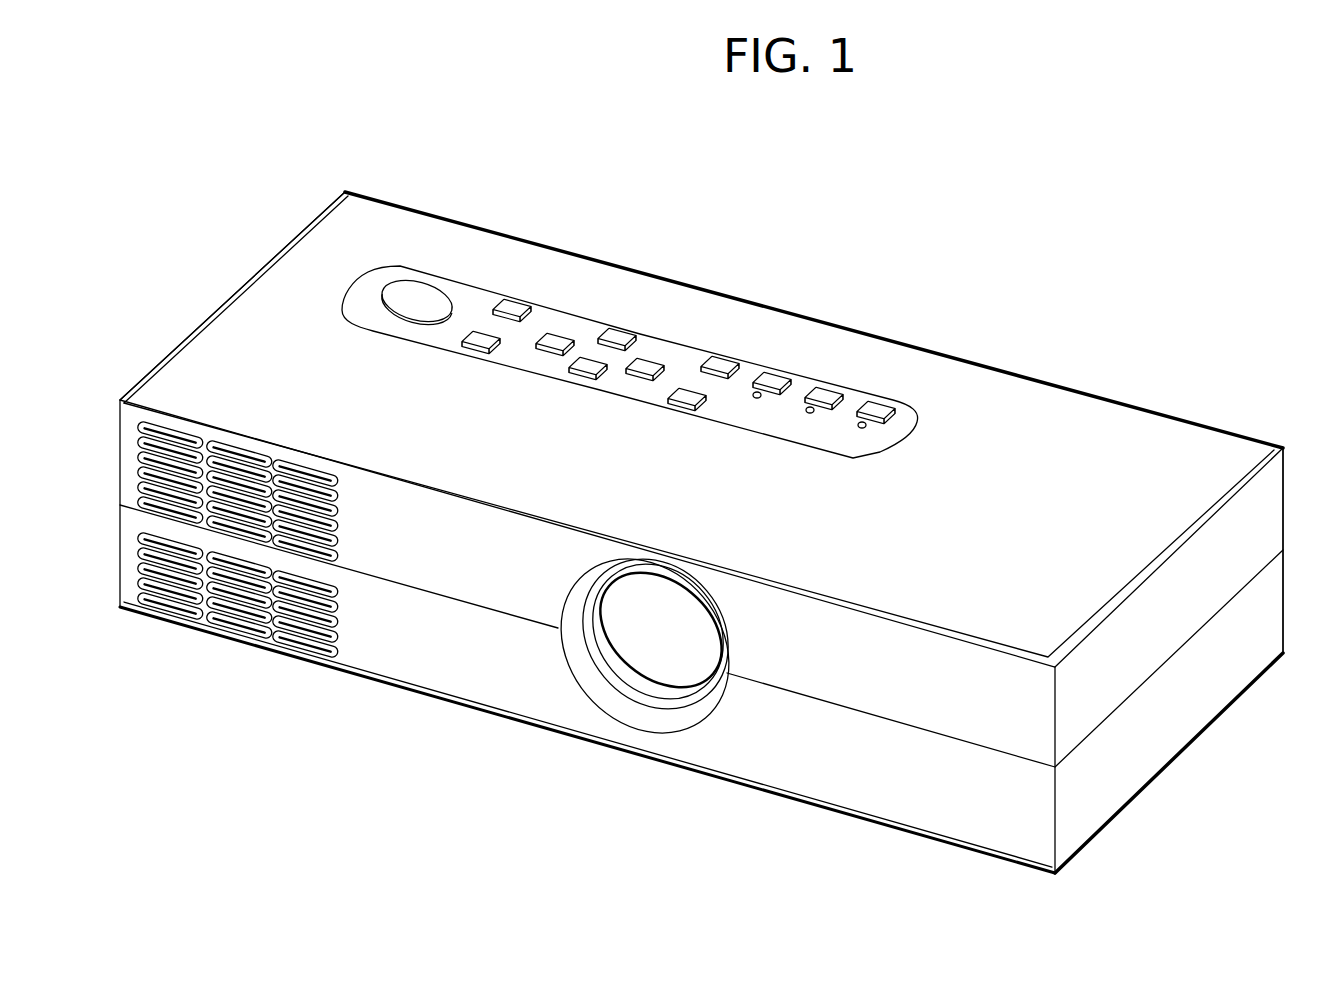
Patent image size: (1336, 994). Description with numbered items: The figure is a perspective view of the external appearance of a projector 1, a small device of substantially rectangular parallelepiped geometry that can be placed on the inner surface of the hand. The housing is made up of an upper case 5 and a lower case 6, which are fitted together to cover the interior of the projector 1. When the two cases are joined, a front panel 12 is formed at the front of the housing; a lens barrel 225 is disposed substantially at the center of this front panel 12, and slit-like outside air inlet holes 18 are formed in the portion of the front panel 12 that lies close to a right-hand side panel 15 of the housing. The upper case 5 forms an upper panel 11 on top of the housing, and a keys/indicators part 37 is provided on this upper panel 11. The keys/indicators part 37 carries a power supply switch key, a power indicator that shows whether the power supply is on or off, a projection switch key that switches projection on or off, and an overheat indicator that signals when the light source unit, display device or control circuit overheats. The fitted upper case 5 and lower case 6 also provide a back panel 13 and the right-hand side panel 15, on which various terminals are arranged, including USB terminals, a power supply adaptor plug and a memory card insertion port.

The projector 1 is at (746, 251).
The upper case 5 is at (313, 240).
The lower case 6 is at (860, 797).
The upper panel 11 is at (293, 307).
The front panel 12 is at (482, 675).
The back panel 13 is at (833, 322).
The right-hand side panel 15 is at (178, 335).
The outside air inlet holes 18 is at (242, 610).
The keys/indicators part 37 is at (624, 322).
The lens barrel 225 is at (632, 690).